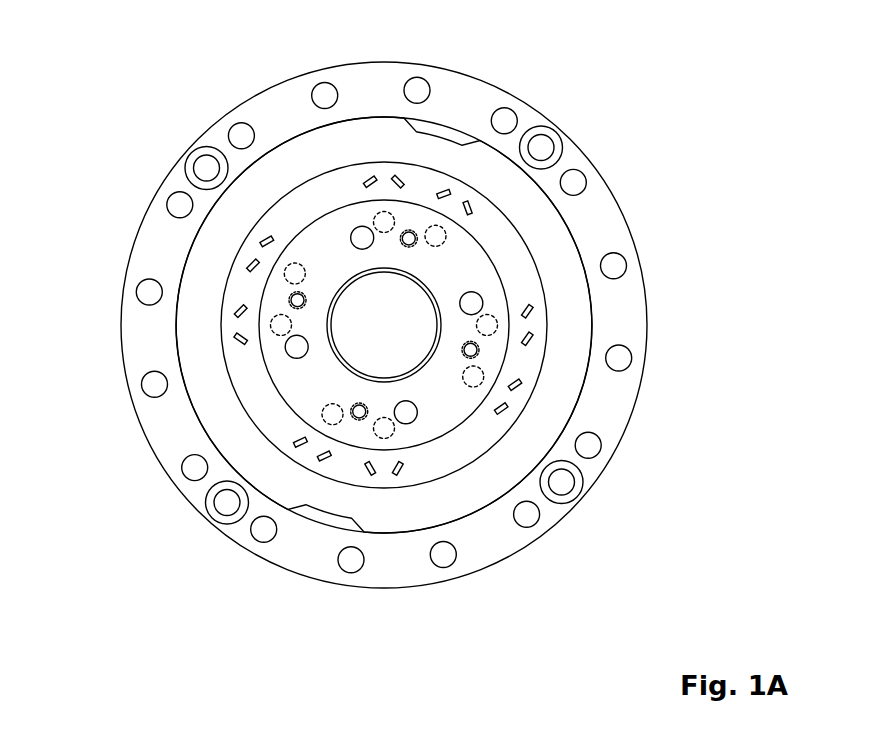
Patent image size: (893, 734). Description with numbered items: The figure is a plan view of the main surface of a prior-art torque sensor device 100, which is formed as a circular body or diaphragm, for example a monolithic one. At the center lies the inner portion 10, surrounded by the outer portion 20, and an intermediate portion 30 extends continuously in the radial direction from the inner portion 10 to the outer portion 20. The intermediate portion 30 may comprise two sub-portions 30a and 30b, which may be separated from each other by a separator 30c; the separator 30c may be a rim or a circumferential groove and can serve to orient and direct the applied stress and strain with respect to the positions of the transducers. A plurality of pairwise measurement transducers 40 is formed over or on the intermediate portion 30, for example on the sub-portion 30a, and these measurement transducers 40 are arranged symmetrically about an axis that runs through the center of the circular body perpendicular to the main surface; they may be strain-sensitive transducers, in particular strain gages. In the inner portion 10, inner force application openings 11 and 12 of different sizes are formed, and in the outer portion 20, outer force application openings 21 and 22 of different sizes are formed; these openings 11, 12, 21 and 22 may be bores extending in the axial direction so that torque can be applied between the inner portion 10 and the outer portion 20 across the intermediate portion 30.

The torque sensor device 100 is at (147, 50).
The inner portion 10 is at (467, 255).
The inner force application opening 11 is at (291, 300).
The inner force application opening 12 is at (358, 226).
The outer portion 20 is at (622, 317).
The outer force application opening 21 is at (264, 532).
The outer force application opening 22 is at (213, 497).
The intermediate portion 30 is at (449, 391).
The sub-portion 30a is at (523, 267).
The sub-portion 30b is at (568, 395).
The separator 30c is at (452, 473).
The measurement transducers 40 is at (237, 335).